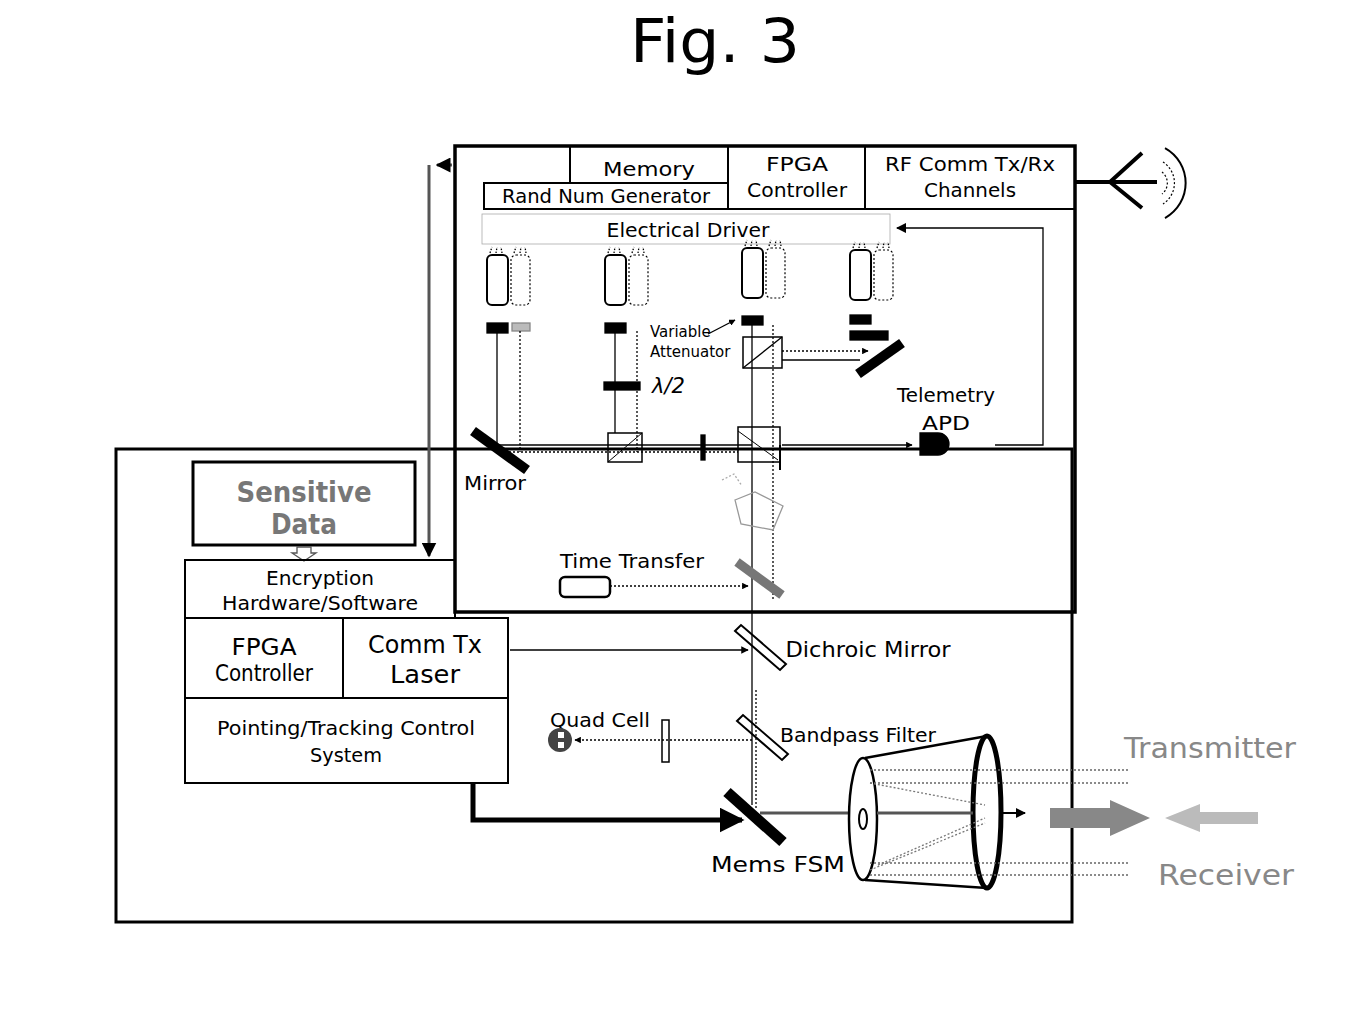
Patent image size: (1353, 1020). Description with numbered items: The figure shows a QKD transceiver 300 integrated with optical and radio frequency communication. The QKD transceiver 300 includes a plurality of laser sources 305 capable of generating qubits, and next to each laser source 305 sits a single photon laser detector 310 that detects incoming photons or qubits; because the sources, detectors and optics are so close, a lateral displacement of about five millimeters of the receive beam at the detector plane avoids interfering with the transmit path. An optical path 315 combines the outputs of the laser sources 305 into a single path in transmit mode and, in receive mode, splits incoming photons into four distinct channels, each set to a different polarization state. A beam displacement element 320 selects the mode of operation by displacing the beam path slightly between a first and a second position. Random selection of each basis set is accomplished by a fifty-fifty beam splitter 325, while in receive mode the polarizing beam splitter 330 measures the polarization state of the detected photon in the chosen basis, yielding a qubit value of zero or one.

The QKD transceiver 300 is at (218, 113).
The laser source 305 is at (482, 283).
The single photon laser detector 310 is at (885, 297).
The optical path 315 is at (756, 547).
The beam displacement element 320 is at (885, 513).
The 50/50 beam splitter 325 is at (809, 463).
The polarizing beam splitter 330 is at (626, 478).